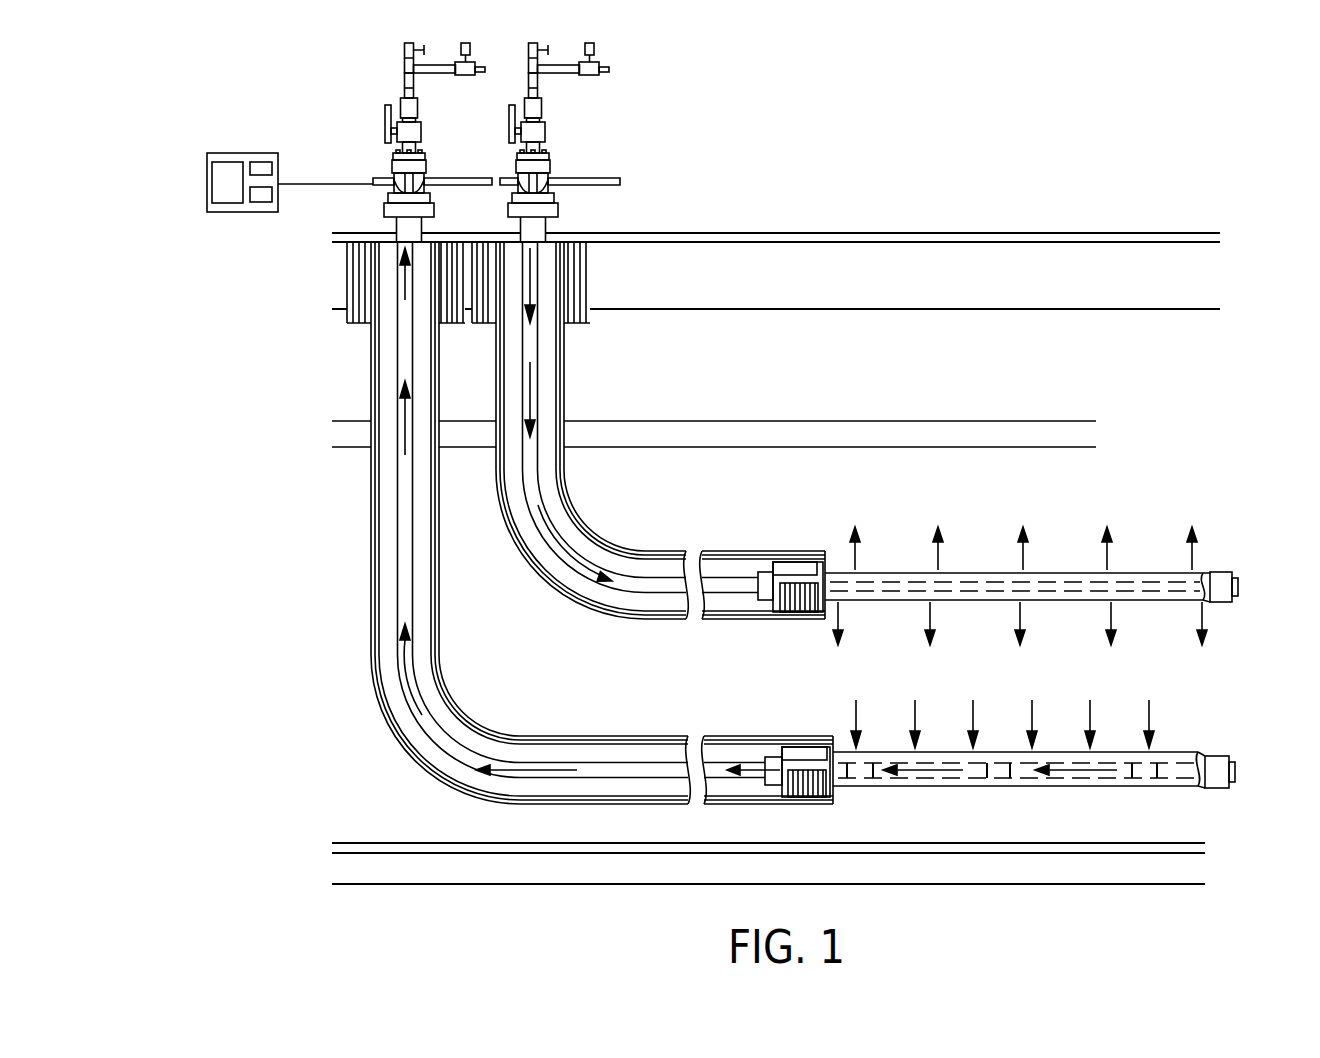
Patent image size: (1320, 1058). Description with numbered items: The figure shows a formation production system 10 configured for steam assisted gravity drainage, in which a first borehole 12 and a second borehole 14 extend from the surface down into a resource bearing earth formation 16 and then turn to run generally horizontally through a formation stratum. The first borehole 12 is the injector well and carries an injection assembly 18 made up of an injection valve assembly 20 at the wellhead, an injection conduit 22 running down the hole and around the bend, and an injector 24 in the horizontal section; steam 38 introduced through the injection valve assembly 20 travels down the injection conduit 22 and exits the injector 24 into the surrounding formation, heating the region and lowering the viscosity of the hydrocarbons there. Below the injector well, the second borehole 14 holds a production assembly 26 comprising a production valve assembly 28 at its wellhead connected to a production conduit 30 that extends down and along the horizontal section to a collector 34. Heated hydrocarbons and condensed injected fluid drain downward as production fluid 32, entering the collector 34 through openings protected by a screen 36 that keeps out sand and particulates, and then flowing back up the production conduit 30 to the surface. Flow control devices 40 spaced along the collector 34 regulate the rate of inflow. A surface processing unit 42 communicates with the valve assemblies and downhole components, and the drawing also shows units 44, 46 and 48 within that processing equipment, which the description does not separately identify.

The formation production system 10 is at (770, 150).
The first borehole 12 is at (552, 254).
The second borehole 14 is at (385, 356).
The earth formation 16 is at (846, 446).
The injection assembly 18 is at (635, 390).
The injection valve assembly 20 is at (585, 138).
The injection conduit 22 is at (530, 468).
The injector 24 is at (1218, 572).
The production assembly 26 is at (385, 775).
The production valve assembly 28 is at (355, 145).
The production conduit 30 is at (400, 572).
The production fluid 32 is at (856, 700).
The collector 34 is at (1213, 756).
The screen 36 is at (873, 755).
The steam 38 is at (1023, 560).
The flow control devices 40 is at (998, 778).
The surface processing unit 42 is at (273, 175).
The memory 44 is at (263, 197).
The sensor interface 46 is at (262, 163).
The processor 48 is at (228, 197).